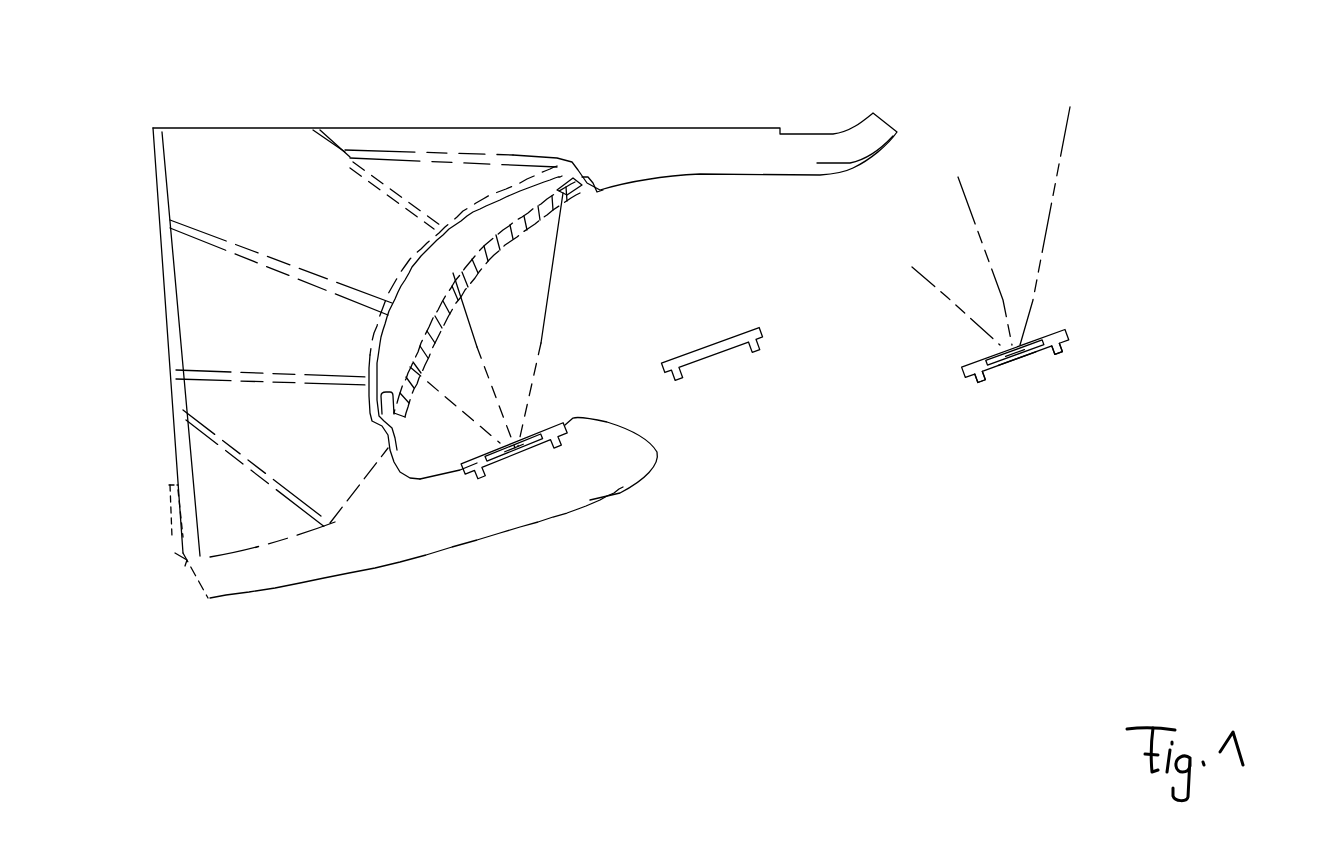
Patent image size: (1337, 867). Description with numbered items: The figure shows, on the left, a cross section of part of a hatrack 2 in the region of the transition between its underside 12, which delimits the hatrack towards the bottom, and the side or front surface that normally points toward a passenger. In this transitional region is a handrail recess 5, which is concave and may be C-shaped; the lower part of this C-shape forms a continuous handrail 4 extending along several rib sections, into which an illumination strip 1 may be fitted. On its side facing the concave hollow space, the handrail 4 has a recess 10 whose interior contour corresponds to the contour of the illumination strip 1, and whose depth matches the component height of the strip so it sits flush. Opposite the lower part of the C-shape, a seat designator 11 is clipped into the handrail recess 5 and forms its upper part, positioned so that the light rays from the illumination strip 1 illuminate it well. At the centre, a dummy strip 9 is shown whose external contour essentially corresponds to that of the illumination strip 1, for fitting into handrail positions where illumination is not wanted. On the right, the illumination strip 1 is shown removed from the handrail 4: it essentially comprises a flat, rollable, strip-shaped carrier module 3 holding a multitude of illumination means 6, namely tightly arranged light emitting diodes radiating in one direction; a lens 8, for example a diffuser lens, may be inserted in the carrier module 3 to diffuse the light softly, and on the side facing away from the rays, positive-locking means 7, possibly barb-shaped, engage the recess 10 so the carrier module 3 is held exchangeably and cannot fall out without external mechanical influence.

The illumination strip 1 is at (627, 330).
The hatrack 2 is at (703, 143).
The carrier module 3 is at (1062, 325).
The handrail 4 is at (610, 467).
The handrail recess 5 is at (500, 327).
The illumination means 6 is at (1040, 367).
The positive-locking means 7 is at (980, 380).
The lens 8 is at (985, 350).
The dummy strip 9 is at (763, 370).
The recess 10 is at (495, 478).
The seat designator 11 is at (477, 65).
The underside 12 is at (237, 597).